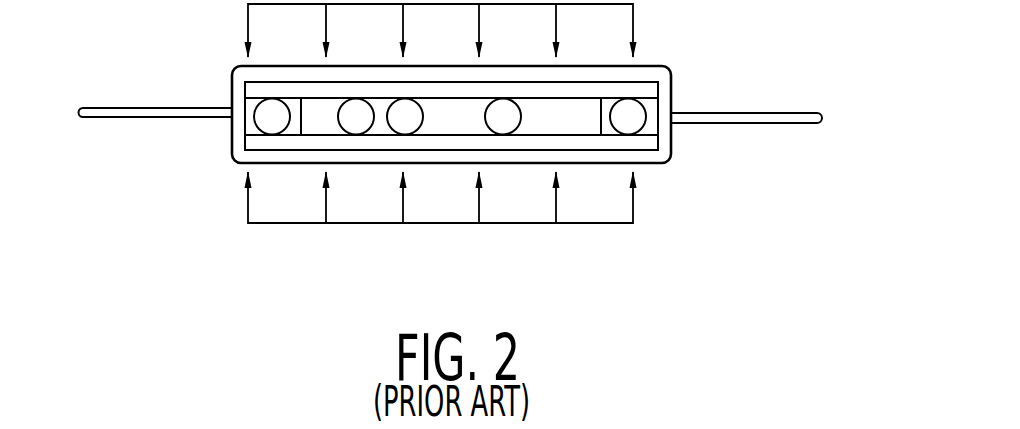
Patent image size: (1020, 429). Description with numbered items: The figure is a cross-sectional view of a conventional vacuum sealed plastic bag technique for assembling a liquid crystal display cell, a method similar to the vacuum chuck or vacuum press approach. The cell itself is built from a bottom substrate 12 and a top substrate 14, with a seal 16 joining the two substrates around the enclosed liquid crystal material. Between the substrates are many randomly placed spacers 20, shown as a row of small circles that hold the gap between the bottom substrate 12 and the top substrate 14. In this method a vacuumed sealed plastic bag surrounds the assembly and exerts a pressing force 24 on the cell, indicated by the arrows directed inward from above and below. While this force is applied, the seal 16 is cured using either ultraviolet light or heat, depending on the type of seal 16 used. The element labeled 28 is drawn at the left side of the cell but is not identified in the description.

The bottom substrate 12 is at (643, 142).
The top substrate 14 is at (647, 90).
The seal 16 is at (247, 104).
The spacers 20 is at (280, 108).
The pressing force 24 is at (636, 31).
The lead 28 is at (128, 108).